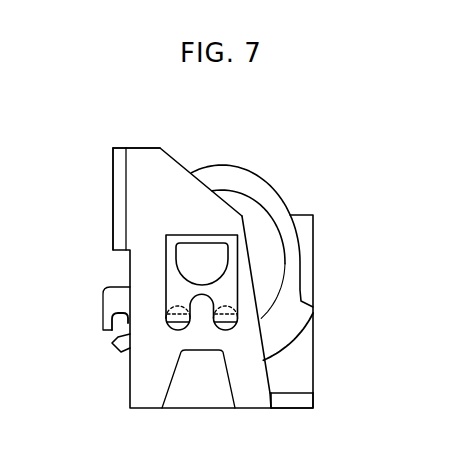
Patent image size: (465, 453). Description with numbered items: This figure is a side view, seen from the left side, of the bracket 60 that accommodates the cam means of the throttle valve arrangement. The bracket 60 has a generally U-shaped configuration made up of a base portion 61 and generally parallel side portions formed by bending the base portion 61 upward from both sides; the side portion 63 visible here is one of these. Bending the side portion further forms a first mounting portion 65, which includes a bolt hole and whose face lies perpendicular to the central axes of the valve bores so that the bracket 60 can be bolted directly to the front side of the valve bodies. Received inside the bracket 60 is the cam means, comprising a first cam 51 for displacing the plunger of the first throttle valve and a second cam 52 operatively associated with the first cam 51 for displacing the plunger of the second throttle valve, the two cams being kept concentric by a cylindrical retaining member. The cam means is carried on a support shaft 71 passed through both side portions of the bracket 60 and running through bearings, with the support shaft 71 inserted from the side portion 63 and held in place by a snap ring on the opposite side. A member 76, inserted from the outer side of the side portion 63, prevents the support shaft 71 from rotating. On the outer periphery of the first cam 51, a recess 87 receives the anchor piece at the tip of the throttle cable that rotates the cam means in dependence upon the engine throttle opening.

The first cam 51 is at (237, 174).
The second cam 52 is at (267, 223).
The bracket 60 is at (205, 397).
The base portion 61 is at (290, 401).
The side portion 63 is at (150, 156).
The first mounting portion 65 is at (117, 183).
The support shaft 71 is at (179, 257).
The member 76 is at (227, 288).
The recess 87 is at (124, 324).